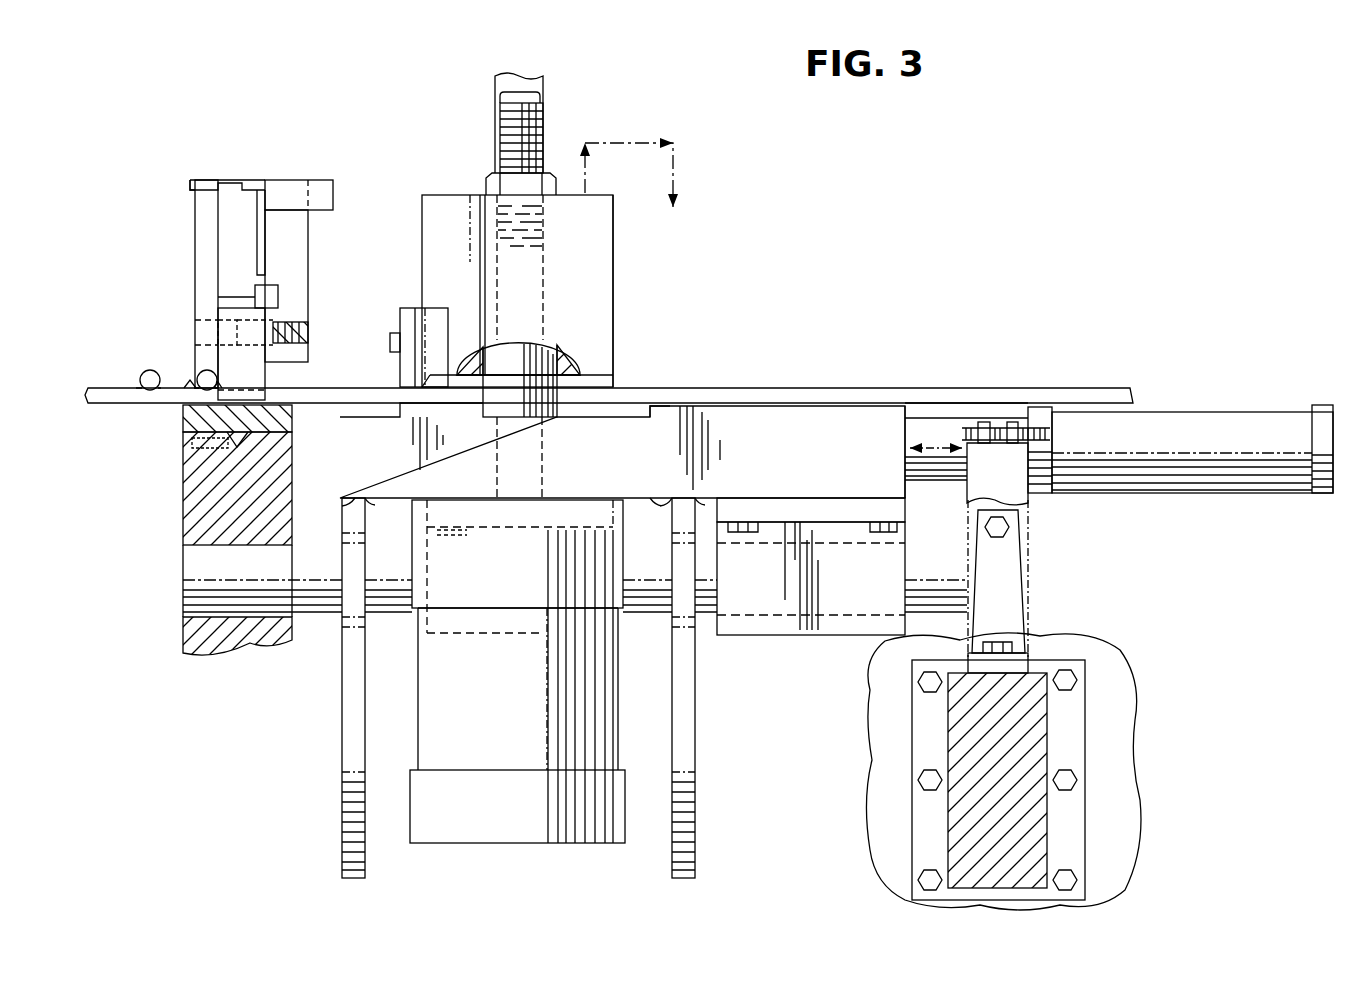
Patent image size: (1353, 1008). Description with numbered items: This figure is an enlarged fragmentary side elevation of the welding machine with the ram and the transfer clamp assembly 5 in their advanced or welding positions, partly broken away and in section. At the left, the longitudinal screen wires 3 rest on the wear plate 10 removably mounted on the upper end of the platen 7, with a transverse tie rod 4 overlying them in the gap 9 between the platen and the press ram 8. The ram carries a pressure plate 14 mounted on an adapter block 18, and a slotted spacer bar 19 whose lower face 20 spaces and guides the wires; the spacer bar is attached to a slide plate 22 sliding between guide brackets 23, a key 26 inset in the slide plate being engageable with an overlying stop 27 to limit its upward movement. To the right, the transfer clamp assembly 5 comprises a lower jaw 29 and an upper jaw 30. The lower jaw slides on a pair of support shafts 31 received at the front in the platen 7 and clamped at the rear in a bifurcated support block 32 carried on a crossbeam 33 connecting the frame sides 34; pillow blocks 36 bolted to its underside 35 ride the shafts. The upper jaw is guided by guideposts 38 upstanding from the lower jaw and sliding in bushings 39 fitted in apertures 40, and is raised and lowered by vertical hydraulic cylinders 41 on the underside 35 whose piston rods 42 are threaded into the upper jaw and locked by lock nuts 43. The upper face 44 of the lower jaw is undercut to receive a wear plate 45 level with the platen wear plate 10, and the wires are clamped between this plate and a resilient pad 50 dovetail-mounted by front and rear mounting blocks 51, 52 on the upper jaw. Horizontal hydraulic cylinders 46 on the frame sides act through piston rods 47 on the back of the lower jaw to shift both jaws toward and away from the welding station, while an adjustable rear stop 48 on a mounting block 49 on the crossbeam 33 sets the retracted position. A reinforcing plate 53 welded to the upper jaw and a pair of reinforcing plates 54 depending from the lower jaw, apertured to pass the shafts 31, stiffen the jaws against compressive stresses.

The longitudinal wires 3 is at (312, 388).
The transverse rods 4 is at (200, 373).
The transfer clamp assembly 5 is at (613, 252).
The platen 7 is at (183, 518).
The press ram 8 is at (190, 185).
The gap 9 is at (192, 385).
The wear plate 10 is at (183, 425).
The pressure plate 14 is at (195, 292).
The adapter block 18 is at (193, 195).
The spacer bar 19 is at (265, 380).
The lower face 20 is at (240, 395).
The slide plate 22 is at (308, 248).
The guide brackets 23 is at (333, 192).
The key 26 is at (278, 296).
The stop 27 is at (257, 278).
The lower jaw 29 is at (800, 472).
The upper jaw 30 is at (613, 313).
The support shafts 31 is at (944, 584).
The support block 32 is at (1008, 594).
The crossbeam 33 is at (1047, 735).
The sides 34 is at (897, 792).
The underside 35 is at (648, 505).
The pillow blocks 36 is at (472, 635).
The guideposts 38 is at (483, 396).
The bushings 39 is at (566, 354).
The apertures 40 is at (487, 368).
The hydraulic cylinders 41 is at (526, 718).
The piston rods 42 is at (543, 125).
The lock nuts 43 is at (486, 187).
The upper face 44 is at (745, 403).
The wear plate 45 is at (650, 410).
The hydraulic cylinders 46 is at (1150, 410).
The piston rods 47 is at (945, 400).
The rear stop 48 is at (1010, 420).
The mounting block 49 is at (1008, 483).
The resilient pad 50 is at (445, 405).
The front mounting block 51 is at (400, 366).
The rear mounting block 52 is at (613, 378).
The reinforcing plate 53 is at (543, 85).
The reinforcing plates 54 is at (342, 740).